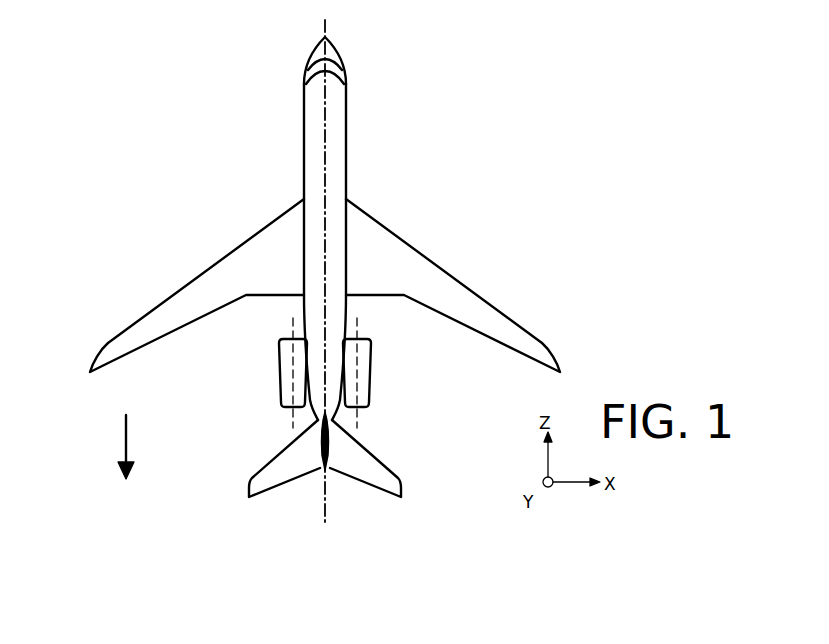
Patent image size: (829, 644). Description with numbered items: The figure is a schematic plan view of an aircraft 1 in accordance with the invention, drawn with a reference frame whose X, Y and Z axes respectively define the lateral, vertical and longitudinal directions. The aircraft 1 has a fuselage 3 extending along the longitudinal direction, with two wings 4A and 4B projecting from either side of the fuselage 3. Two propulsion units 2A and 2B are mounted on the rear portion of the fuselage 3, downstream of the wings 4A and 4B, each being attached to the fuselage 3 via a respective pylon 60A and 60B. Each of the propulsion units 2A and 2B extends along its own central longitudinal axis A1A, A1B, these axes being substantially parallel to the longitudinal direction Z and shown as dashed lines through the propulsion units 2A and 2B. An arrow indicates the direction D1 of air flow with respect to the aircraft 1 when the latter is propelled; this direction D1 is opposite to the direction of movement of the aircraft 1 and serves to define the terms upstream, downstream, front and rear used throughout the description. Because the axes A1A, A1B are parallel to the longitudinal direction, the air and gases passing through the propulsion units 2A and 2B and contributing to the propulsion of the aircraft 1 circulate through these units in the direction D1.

The aircraft 1 is at (325, 267).
The fuselage 3 is at (312, 117).
The wing 4A is at (207, 272).
The wing 4B is at (423, 265).
The propulsion unit 2A is at (282, 378).
The propulsion unit 2B is at (368, 378).
The pylon 60A is at (303, 353).
The pylon 60B is at (347, 353).
The central longitudinal axis A1A is at (292, 425).
The central longitudinal axis A1B is at (358, 425).
The direction of air flow D1 is at (122, 430).